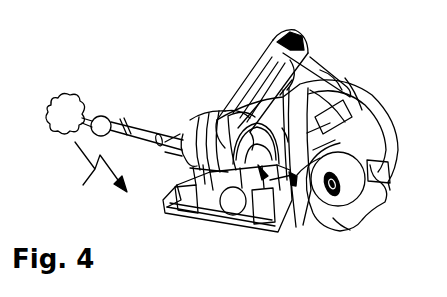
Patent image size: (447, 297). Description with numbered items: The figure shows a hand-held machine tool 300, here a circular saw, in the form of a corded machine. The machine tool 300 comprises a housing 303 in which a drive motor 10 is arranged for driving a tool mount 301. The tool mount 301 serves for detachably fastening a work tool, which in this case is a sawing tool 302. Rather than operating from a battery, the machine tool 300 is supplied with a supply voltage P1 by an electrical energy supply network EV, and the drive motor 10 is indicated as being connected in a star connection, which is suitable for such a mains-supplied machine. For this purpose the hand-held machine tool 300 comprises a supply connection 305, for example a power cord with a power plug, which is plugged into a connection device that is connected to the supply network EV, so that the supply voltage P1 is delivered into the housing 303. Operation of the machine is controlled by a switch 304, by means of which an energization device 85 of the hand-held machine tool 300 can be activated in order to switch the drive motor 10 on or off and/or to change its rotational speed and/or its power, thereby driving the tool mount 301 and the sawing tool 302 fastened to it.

The electrical energy supply network EV is at (62, 97).
The supply connection 305 is at (104, 119).
The housing 303 is at (183, 136).
The drive motor 10 is at (207, 122).
The machine tool 300 is at (370, 103).
The energization device 85 is at (257, 67).
The switch 304 is at (312, 62).
The tool mount 301 is at (380, 145).
The sawing tool 302 is at (333, 220).
The supply voltage P1 is at (98, 178).